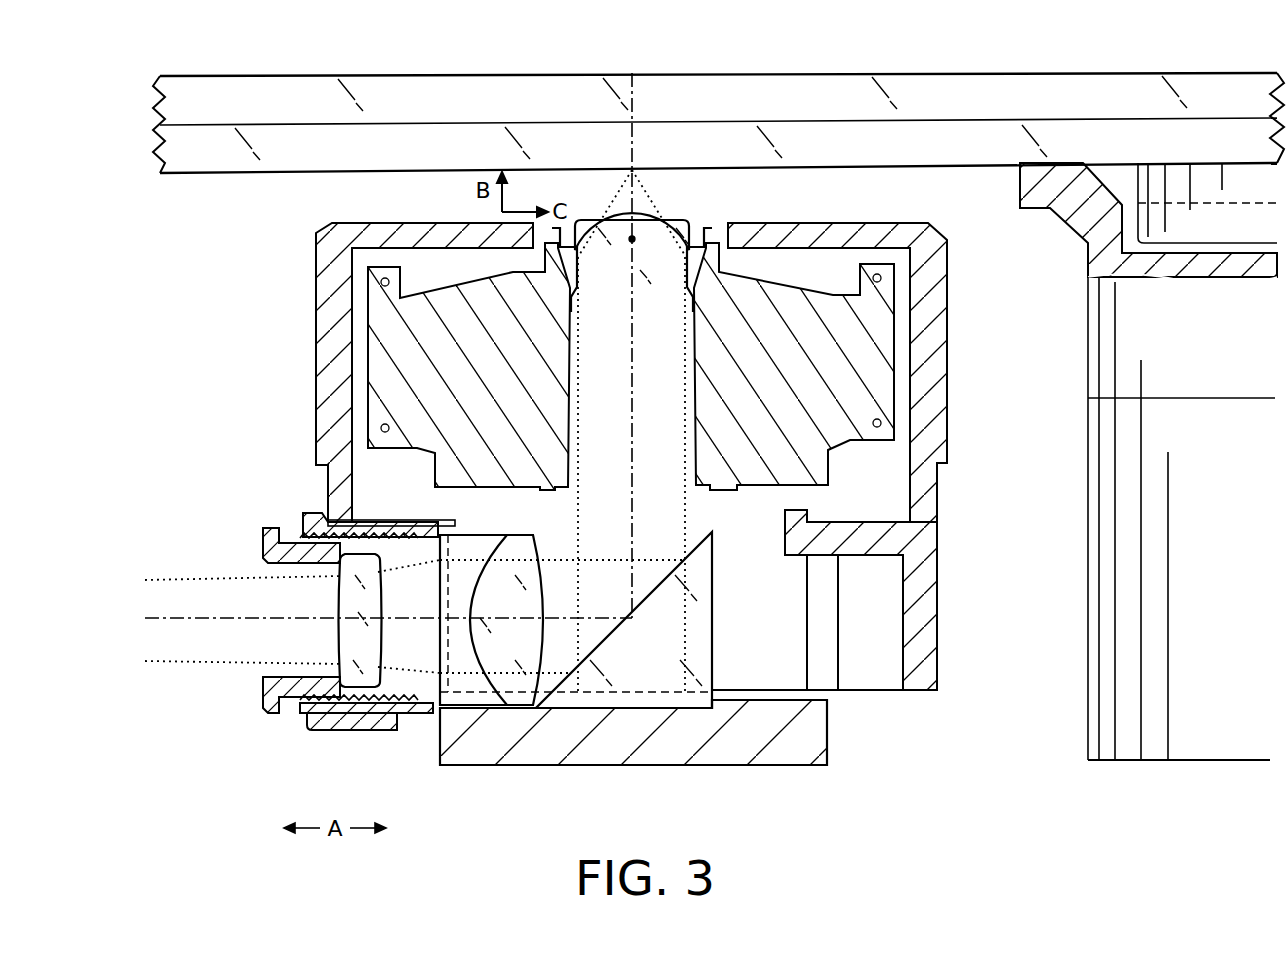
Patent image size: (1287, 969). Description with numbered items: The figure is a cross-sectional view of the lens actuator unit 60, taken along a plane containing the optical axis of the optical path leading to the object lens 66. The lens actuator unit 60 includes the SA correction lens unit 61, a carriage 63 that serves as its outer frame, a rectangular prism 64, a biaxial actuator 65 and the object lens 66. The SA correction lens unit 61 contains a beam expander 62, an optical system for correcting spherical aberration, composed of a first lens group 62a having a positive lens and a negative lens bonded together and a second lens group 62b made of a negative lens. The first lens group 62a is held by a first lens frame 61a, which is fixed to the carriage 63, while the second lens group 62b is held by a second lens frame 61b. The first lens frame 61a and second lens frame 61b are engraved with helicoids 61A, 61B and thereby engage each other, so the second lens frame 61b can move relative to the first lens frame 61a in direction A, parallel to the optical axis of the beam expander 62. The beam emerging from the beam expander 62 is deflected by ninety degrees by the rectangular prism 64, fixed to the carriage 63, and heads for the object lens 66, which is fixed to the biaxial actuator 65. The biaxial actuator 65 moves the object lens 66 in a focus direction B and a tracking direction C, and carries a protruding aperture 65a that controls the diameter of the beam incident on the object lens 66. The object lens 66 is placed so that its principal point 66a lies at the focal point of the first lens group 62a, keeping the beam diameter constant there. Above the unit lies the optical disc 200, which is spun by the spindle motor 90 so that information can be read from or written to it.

The optical disc 200 is at (708, 68).
The spindle motor 90 is at (1147, 774).
The lens actuator unit 60 is at (874, 784).
The SA correction lens unit 61 is at (254, 672).
The first lens frame 61a is at (313, 718).
The helicoid 61A is at (395, 706).
The second lens frame 61b is at (262, 538).
The helicoid 61B is at (300, 523).
The beam expander 62 is at (533, 516).
The first lens group 62a is at (535, 712).
The second lens group 62b is at (348, 645).
The carriage 63 is at (942, 628).
The rectangular prism 64 is at (698, 634).
The biaxial actuator 65 is at (812, 462).
The aperture 65a is at (686, 272).
The object lens 66 is at (612, 275).
The principal point 66a is at (634, 238).